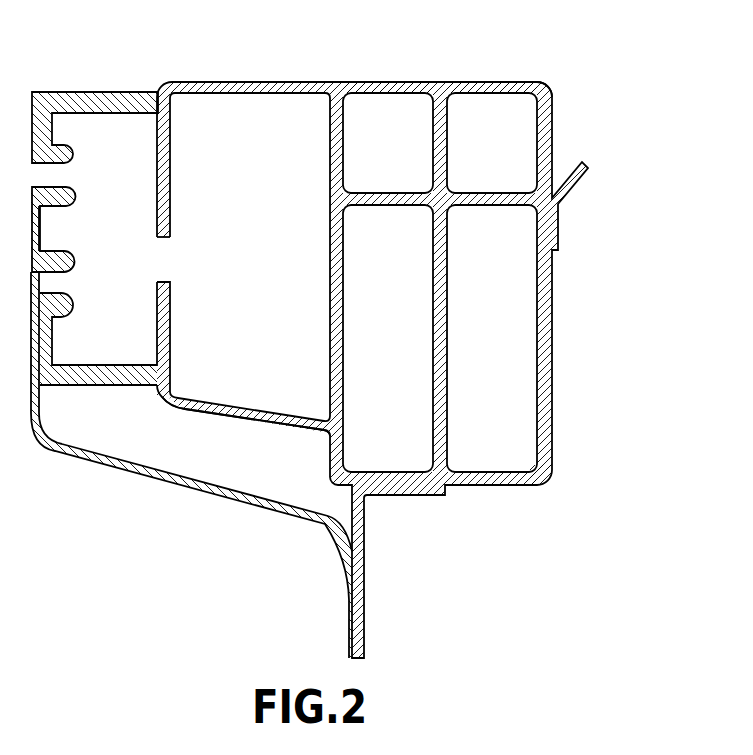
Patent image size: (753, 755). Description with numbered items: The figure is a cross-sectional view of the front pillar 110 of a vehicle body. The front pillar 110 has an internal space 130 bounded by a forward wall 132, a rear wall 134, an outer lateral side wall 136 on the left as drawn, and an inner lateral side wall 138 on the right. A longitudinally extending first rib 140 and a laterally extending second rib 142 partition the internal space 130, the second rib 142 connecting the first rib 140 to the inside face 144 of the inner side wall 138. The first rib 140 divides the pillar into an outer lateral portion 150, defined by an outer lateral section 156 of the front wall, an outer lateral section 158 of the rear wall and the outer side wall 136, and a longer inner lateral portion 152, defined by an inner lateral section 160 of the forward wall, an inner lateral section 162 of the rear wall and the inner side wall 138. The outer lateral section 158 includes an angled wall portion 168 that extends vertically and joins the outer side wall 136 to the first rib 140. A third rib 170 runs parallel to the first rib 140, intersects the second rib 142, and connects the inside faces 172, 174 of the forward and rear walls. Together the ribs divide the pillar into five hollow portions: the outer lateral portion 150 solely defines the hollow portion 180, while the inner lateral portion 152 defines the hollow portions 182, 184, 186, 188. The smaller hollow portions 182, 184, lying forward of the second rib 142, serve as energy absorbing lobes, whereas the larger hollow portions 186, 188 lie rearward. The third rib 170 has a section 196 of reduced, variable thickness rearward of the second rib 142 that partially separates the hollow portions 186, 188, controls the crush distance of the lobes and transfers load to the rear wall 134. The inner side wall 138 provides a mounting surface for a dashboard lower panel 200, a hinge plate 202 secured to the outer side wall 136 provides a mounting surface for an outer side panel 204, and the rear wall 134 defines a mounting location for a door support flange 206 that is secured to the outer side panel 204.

The front pillar 110 is at (592, 72).
The internal space 130 is at (277, 122).
The forward wall 132 is at (375, 82).
The rear wall 134 is at (473, 487).
The outer lateral side wall 136 is at (157, 195).
The inner lateral side wall 138 is at (553, 340).
The first rib 140 is at (330, 300).
The second rib 142 is at (390, 205).
The inside face 144 is at (538, 273).
The outer lateral portion 150 is at (208, 443).
The inner lateral portion 152 is at (435, 522).
The outer lateral section of the front wall 156 is at (225, 82).
The outer lateral section of the rear wall 158 is at (250, 419).
The inner lateral section of the forward wall 160 is at (480, 82).
The inner lateral section of the rear wall 162 is at (517, 487).
The angled wall portion 168 is at (232, 403).
The third rib 170 is at (448, 415).
The inside face of the forward wall 172 is at (235, 93).
The inside face of the rear wall 174 is at (408, 472).
The hollow portion 180 is at (198, 318).
The hollow portion 182 is at (380, 148).
The hollow portion 184 is at (515, 150).
The hollow portion 186 is at (332, 518).
The hollow portion 188 is at (512, 448).
The section of the third rib 196 is at (448, 320).
The dashboard lower panel 200 is at (568, 192).
The hinge plate 202 is at (100, 93).
The outer side panel 204 is at (100, 460).
The door support flange 206 is at (365, 603).